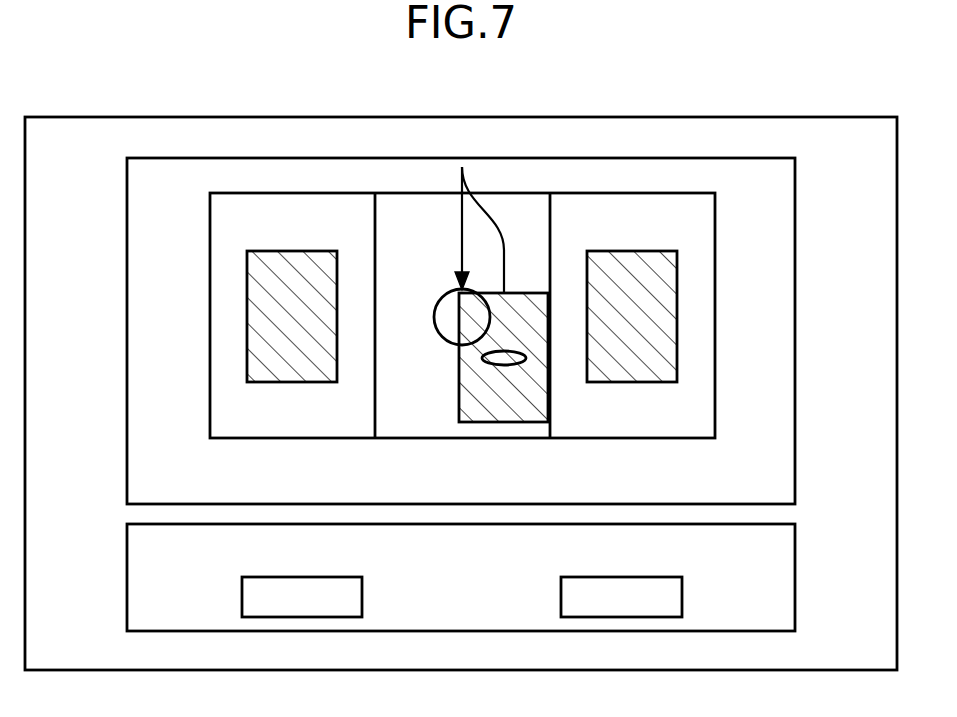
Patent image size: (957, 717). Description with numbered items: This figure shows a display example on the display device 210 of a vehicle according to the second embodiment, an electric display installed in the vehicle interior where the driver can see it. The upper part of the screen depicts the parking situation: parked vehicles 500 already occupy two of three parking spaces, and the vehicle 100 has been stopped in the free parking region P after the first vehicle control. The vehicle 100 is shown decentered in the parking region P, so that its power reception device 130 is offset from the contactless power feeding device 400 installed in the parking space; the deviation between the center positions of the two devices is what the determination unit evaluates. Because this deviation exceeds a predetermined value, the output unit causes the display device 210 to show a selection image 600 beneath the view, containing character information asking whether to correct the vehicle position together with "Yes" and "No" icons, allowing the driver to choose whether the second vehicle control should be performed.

The display device 210 is at (774, 117).
The parking region P is at (390, 438).
The parked vehicles 500 is at (302, 382).
The vehicle 100 is at (535, 422).
The power reception device 130 is at (505, 365).
The contactless power feeding device 400 is at (455, 345).
The selection image 600 is at (797, 573).